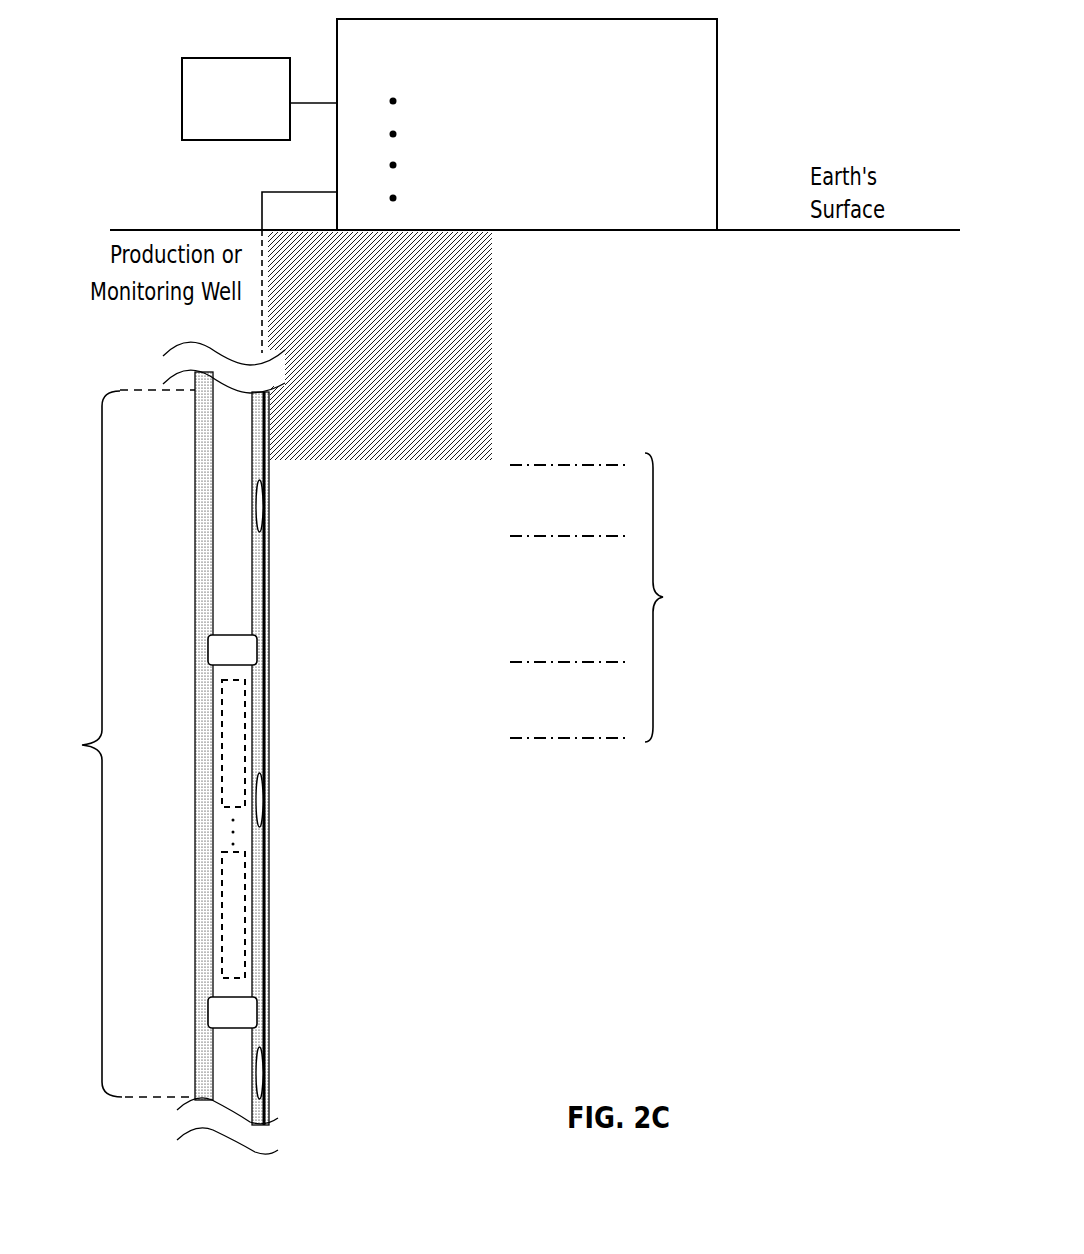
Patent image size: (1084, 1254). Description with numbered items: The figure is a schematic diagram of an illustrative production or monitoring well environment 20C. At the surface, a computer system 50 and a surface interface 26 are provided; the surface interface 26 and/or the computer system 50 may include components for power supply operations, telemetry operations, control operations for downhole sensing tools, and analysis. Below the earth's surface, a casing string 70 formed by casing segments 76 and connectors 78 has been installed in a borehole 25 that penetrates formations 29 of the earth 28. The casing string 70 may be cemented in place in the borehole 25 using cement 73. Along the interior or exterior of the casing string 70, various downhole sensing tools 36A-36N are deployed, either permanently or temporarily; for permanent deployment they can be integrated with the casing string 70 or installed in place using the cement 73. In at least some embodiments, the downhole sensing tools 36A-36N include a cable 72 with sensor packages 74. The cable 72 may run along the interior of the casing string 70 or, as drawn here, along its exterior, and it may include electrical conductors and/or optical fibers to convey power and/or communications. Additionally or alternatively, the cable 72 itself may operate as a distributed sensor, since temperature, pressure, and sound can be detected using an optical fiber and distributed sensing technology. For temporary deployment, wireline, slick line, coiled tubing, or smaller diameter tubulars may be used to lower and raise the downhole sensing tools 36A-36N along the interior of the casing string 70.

The production or monitoring well environment 20C is at (829, 94).
The computer system 50 is at (262, 57).
The surface interface 26 is at (718, 118).
The earth 28 is at (307, 277).
The formations 29 is at (606, 597).
The borehole 25 is at (193, 398).
The cement 73 is at (207, 510).
The casing segments 76 is at (220, 572).
The cable 72 is at (266, 598).
The sensor packages 74 is at (267, 505).
The connectors 78 is at (212, 650).
The downhole sensing tool 36A is at (223, 742).
The downhole sensing tool 36N is at (224, 912).
The casing string 70 is at (119, 743).